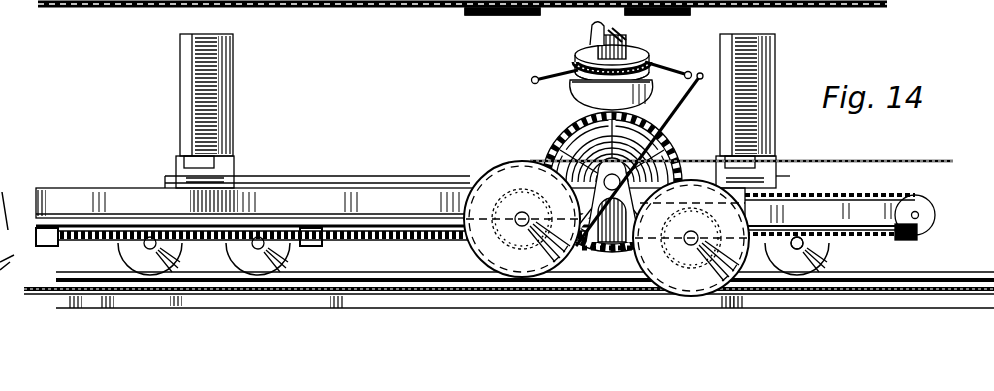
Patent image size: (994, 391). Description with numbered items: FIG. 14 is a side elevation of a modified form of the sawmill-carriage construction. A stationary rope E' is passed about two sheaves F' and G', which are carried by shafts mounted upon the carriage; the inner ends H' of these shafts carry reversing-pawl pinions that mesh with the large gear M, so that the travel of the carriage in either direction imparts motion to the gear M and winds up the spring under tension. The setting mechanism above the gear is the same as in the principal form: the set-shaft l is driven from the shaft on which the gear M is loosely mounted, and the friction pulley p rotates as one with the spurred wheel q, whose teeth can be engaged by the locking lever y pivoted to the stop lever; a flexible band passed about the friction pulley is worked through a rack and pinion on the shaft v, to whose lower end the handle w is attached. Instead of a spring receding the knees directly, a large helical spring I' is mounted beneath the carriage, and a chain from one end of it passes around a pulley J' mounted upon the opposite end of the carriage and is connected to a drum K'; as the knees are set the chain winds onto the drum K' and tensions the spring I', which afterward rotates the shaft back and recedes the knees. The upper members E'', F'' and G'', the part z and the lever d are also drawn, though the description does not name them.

The upper guide rail E'' is at (462, 20).
The upper rail bracket F'' is at (502, 22).
The upper rail bracket G'' is at (657, 22).
The set-shaft l is at (412, 176).
The helical spring I' is at (390, 247).
The sheave F' is at (317, 151).
The sheave G' is at (716, 149).
The large gear M is at (568, 132).
The spurred wheel q is at (580, 53).
The shaft v is at (588, 37).
The locking lever y is at (590, 26).
The bowl z is at (640, 58).
The handle w is at (533, 82).
The friction pulley p is at (668, 65).
The lever d is at (642, 159).
The stationary rope E' is at (741, 149).
The pulley J' is at (850, 217).
The drum K' is at (522, 219).
The inner shaft ends H' is at (628, 238).